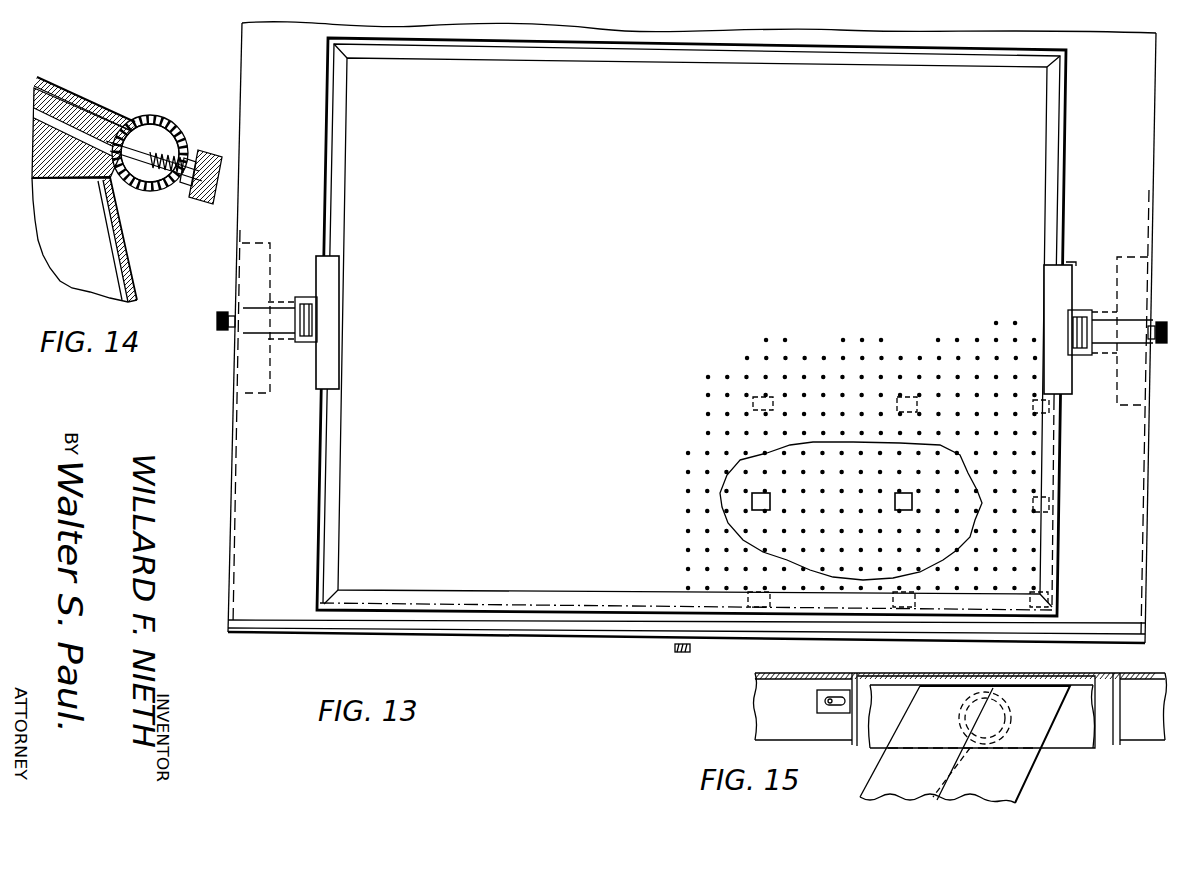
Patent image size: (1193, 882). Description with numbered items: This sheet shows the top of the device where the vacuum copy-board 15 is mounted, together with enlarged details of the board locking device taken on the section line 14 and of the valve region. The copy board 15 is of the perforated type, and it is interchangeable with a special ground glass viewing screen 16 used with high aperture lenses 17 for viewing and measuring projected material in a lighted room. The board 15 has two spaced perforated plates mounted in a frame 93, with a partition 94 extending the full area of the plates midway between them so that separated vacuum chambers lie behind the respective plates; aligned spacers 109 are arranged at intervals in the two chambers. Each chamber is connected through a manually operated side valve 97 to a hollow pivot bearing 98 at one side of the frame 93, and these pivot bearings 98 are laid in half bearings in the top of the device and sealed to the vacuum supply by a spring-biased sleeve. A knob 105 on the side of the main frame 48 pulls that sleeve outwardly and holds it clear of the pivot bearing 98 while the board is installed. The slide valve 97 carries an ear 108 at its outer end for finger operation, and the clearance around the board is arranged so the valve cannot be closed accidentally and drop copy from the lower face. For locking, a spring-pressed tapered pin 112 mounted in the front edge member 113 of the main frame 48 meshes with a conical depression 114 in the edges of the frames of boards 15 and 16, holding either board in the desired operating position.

In FIG. 13, the section line 14— 14 is at (683, 584).
In FIG. 13, the vacuum copy-board 15 is at (826, 160).
In FIG. 15, the vacuum copy-board 15 is at (755, 710).
In FIG. 14, the vacuum copy-board 15 is at (80, 79).
In FIG. 13, the ground glass viewing screen 16 is at (1072, 240).
In FIG. 13, the lenses 17 is at (979, 332).
In FIG. 15, the main frame 48 is at (1018, 768).
In FIG. 14, the frame 93 is at (100, 101).
In FIG. 14, the partition 94 is at (255, 190).
In FIG. 15, the side valve 97 is at (838, 694).
In FIG. 13, the hollow pivot bearing 98 is at (303, 297).
In FIG. 13, the knob 105 is at (222, 333).
In FIG. 15, the ear 108 is at (817, 694).
In FIG. 13, the spacers 109 is at (768, 502).
In FIG. 13, the spring-pressed tapered pin 112 is at (692, 648).
In FIG. 14, the spring-pressed tapered pin 112 is at (123, 146).
In FIG. 14, the front edge member 113 is at (152, 184).
In FIG. 14, the conical depression 114 is at (108, 165).